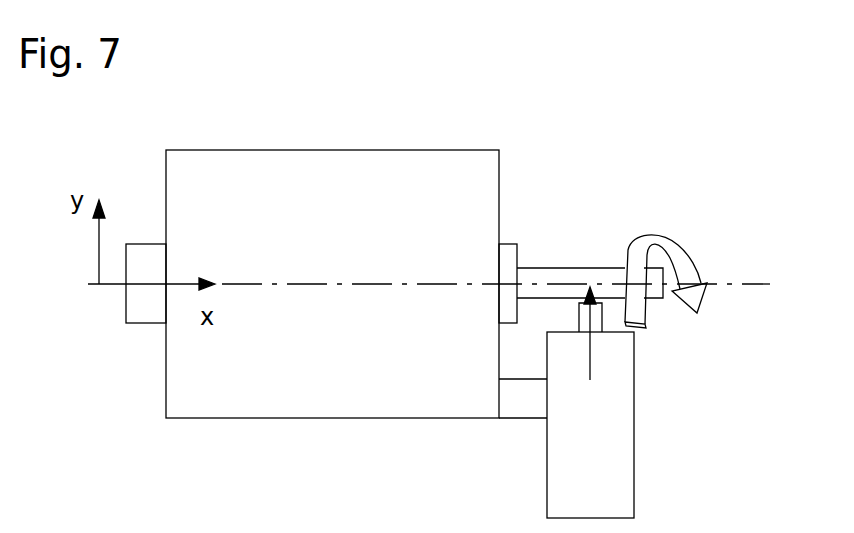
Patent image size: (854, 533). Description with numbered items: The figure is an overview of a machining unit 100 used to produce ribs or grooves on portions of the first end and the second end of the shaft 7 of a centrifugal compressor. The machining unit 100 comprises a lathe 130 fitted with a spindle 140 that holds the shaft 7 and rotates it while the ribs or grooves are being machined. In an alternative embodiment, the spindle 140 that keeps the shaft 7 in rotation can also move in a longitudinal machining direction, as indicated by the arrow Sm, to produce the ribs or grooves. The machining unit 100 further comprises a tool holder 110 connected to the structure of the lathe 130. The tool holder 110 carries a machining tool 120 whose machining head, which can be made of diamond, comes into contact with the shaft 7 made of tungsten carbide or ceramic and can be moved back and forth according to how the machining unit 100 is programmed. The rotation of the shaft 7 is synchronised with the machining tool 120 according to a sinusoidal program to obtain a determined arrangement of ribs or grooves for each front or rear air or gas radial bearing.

The machining unit 100 is at (211, 110).
The lathe 130 is at (352, 165).
The spindle 140 is at (510, 247).
The shaft 7 is at (570, 272).
The arrow Sm is at (683, 263).
The machining tool 120 is at (600, 321).
The tool holder 110 is at (623, 435).